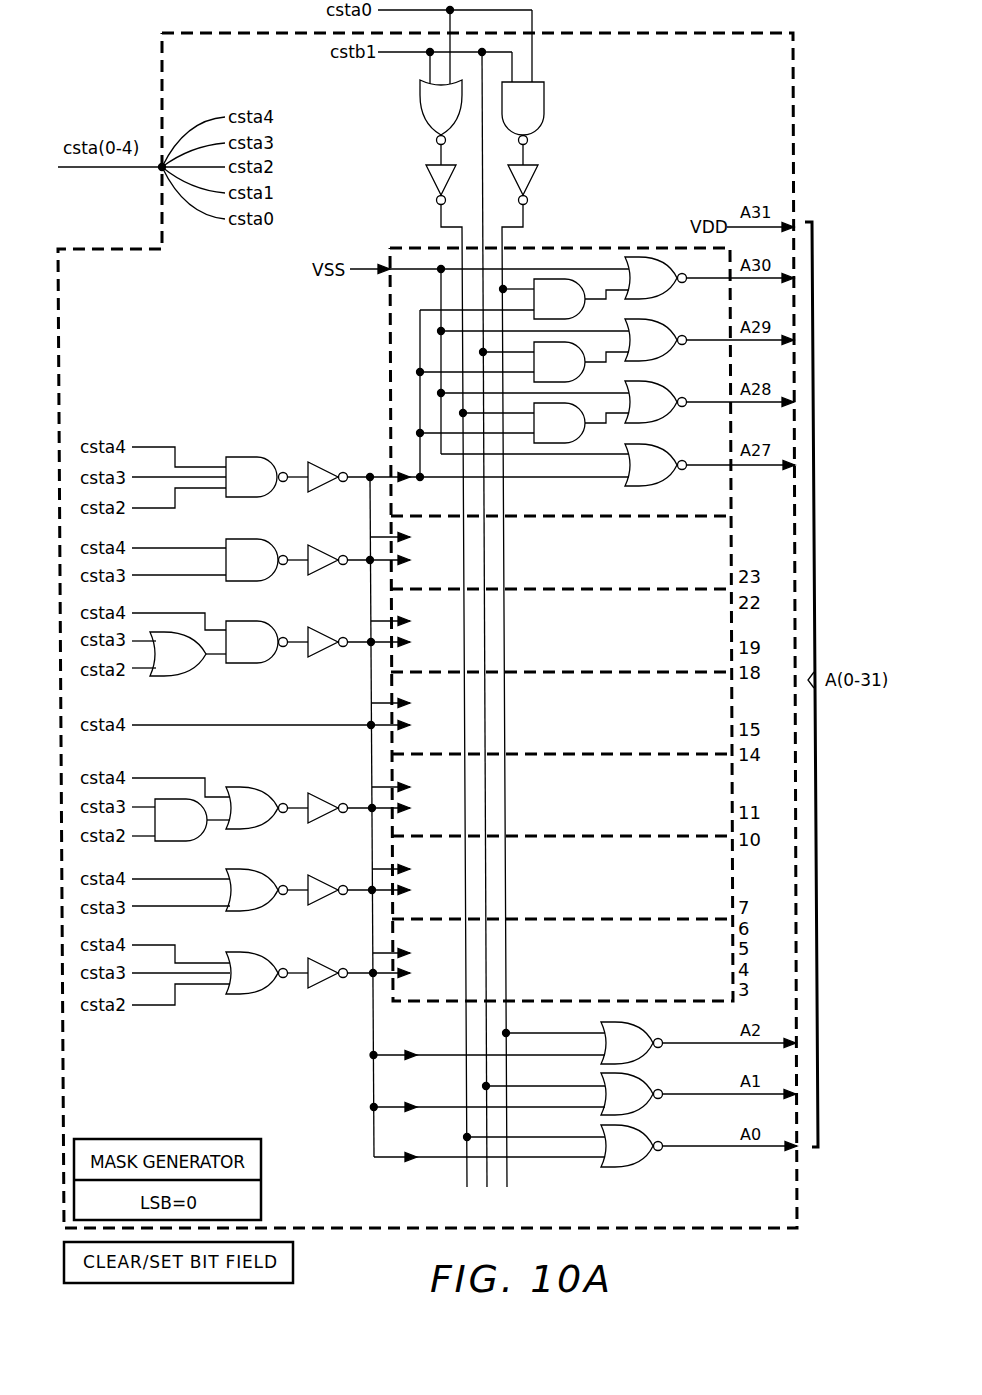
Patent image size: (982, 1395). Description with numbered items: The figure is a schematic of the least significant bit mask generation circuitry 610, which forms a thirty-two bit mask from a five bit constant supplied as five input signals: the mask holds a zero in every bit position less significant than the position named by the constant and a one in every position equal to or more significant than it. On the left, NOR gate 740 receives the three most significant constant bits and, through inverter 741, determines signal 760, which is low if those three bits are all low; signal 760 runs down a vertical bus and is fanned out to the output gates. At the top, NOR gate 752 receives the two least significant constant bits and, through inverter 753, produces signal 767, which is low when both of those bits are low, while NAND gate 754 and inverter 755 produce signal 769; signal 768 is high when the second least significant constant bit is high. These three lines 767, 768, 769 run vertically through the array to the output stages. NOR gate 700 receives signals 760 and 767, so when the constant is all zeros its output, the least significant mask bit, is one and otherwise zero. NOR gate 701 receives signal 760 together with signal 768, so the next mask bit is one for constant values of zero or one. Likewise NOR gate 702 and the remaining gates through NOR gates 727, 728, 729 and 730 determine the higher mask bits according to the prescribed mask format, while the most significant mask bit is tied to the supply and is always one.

The least significant bit (lsb) mask generation circuitry 610 is at (793, 152).
The NOR gate 752 is at (418, 102).
The inverter 753 is at (428, 182).
The NAND gate 754 is at (546, 101).
The inverter 755 is at (536, 183).
The NOR gate 727 is at (684, 471).
The NOR gate 728 is at (684, 408).
The NOR gate 729 is at (684, 346).
The NOR gate 730 is at (684, 284).
The NOR gate 740 is at (237, 996).
The inverter 741 is at (326, 990).
The signal 760 is at (384, 1160).
The signal 767 is at (465, 1170).
The signal 768 is at (485, 1182).
The signal 769 is at (507, 1170).
The NOR gate 700 is at (660, 1152).
The NOR gate 701 is at (660, 1098).
The NOR gate 702 is at (660, 1047).